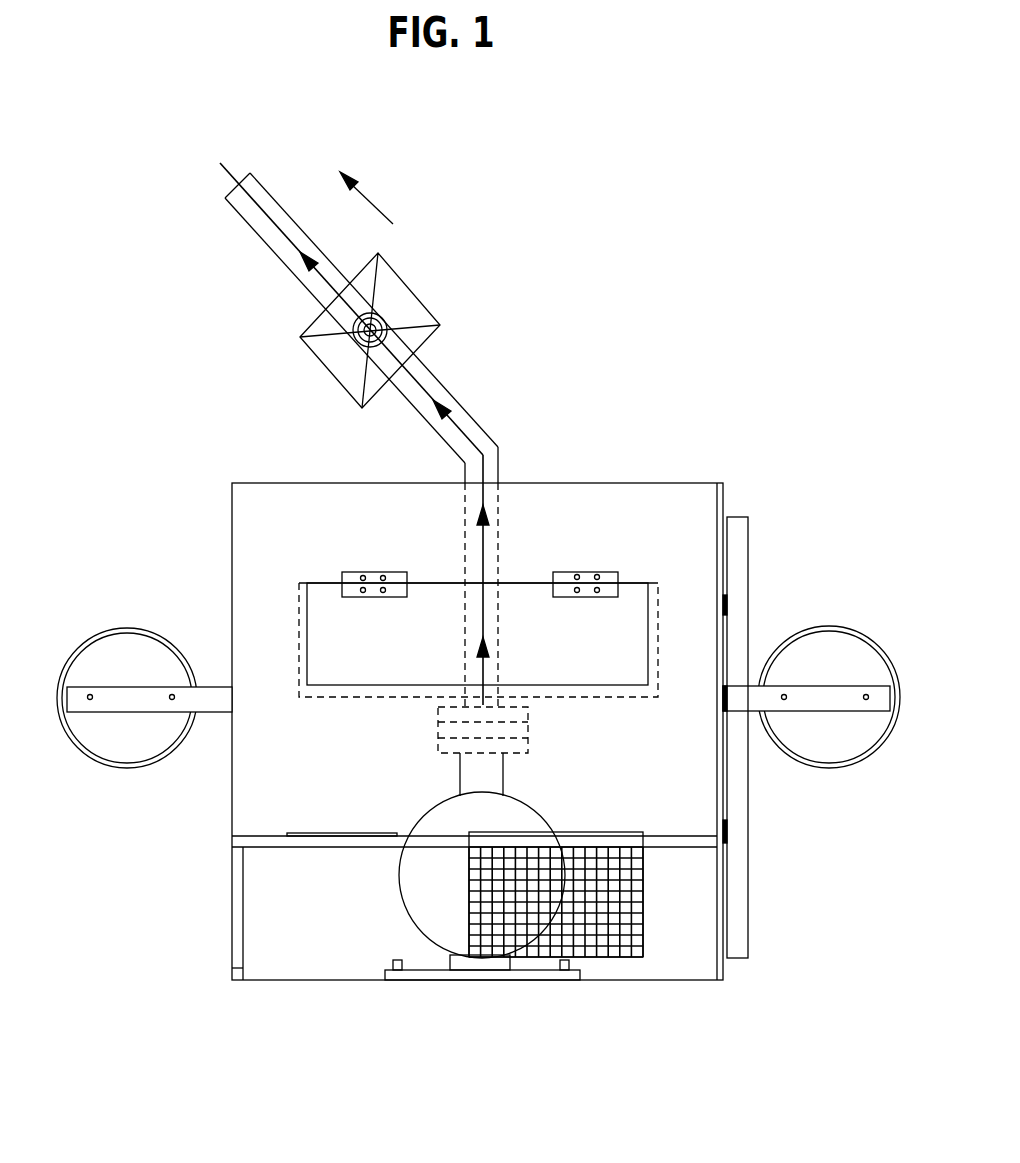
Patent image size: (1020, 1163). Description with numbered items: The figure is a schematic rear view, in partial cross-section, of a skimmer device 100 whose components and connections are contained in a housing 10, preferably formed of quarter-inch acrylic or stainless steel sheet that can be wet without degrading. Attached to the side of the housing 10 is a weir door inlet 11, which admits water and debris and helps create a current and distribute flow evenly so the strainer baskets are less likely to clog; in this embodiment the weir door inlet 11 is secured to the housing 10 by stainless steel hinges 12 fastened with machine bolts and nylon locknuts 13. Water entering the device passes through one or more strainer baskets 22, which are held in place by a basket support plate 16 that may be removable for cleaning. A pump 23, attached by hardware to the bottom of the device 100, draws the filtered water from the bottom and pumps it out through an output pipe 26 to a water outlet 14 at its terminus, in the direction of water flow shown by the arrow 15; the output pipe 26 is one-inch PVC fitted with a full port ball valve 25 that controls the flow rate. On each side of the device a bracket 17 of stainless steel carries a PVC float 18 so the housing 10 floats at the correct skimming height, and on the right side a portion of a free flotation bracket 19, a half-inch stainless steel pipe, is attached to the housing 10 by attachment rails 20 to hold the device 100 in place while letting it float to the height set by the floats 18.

The skimmer device 100 is at (572, 350).
The housing 10 is at (693, 462).
The weir door inlet 11 is at (323, 670).
The stainless steel hinges 12 is at (530, 562).
The nylon locknuts 13 is at (596, 548).
The water outlet 14 is at (205, 184).
The direction of water flow 15 is at (380, 213).
The basket support plate 16 is at (208, 855).
The bracket 17 is at (52, 703).
The float 18 is at (125, 628).
The bracket 19 is at (768, 580).
The attachment rails 20 is at (728, 607).
The strainer baskets 22 is at (599, 810).
The pump 23 is at (450, 903).
The ball valve 25 is at (417, 282).
The output pipe 26 is at (258, 235).